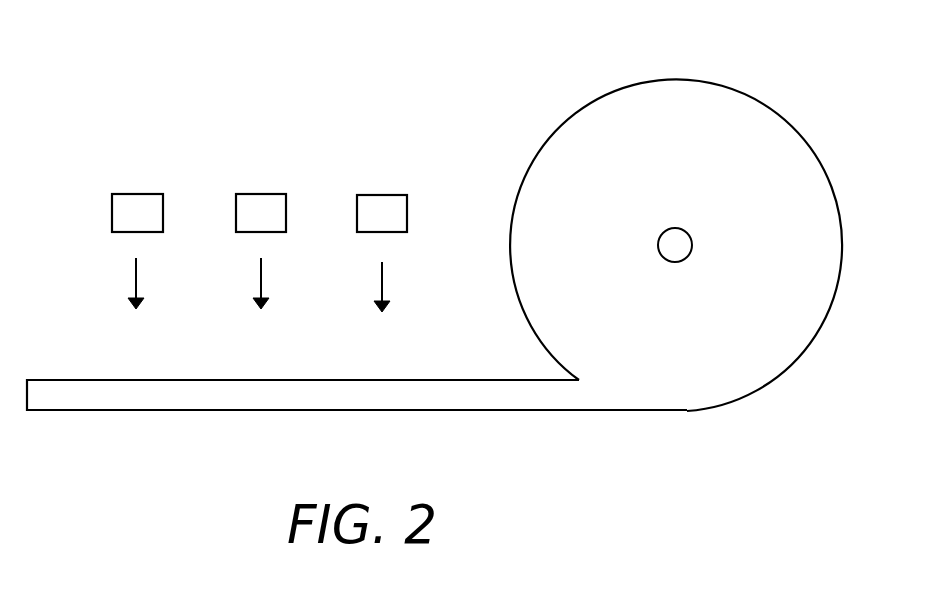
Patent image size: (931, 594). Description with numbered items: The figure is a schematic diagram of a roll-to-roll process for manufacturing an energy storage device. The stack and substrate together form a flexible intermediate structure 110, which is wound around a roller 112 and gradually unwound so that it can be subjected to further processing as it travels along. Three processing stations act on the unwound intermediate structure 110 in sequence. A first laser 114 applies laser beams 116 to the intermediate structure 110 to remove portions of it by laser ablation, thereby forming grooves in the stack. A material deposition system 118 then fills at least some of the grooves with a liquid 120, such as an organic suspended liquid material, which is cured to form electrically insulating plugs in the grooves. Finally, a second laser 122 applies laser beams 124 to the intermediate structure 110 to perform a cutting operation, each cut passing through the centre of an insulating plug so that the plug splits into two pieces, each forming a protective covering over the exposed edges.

The intermediate structure 110 is at (673, 80).
The roller 112 is at (674, 228).
The first laser 114 is at (382, 195).
The laser beams 116 is at (382, 279).
The material deposition system 118 is at (261, 194).
The liquid 120 is at (261, 277).
The second laser 122 is at (136, 194).
The laser beams 124 is at (136, 277).